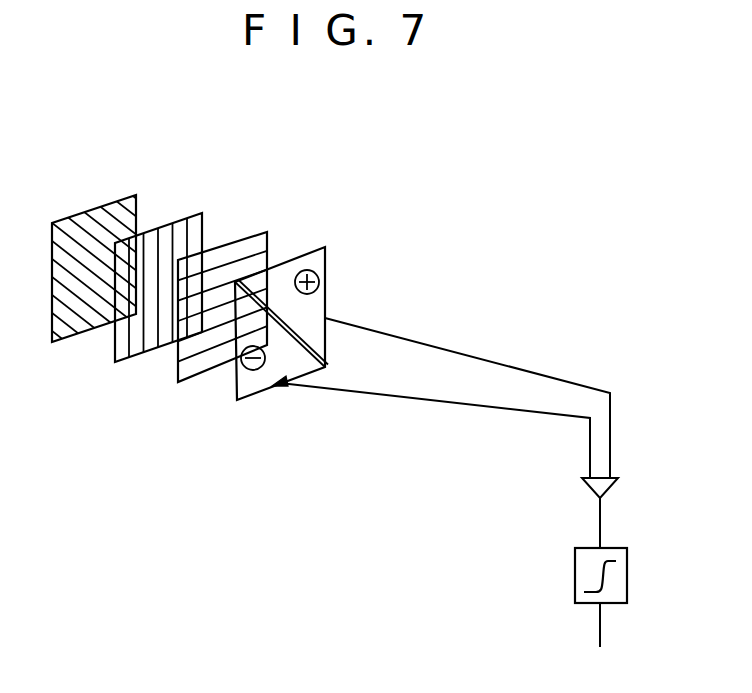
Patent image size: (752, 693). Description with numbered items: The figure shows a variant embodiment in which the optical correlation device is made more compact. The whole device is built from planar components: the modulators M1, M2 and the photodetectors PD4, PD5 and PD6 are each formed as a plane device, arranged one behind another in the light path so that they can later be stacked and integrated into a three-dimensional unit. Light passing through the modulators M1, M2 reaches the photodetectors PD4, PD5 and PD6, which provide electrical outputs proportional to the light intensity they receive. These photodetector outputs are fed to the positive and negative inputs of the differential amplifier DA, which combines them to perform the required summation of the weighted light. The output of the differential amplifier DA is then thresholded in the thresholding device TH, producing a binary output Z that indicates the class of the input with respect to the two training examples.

The differential amplifier DA is at (101, 204).
The modulator M1 is at (203, 233).
The modulator M2 is at (267, 247).
The photodetector PD4 is at (325, 260).
The photodetector PD5 is at (236, 388).
The photodetector PD6 is at (325, 367).
The thresholding device TH is at (575, 578).
The binary output Z is at (611, 635).